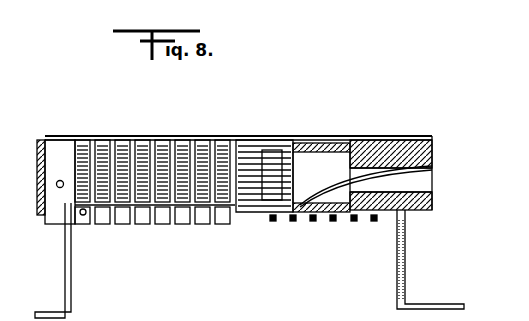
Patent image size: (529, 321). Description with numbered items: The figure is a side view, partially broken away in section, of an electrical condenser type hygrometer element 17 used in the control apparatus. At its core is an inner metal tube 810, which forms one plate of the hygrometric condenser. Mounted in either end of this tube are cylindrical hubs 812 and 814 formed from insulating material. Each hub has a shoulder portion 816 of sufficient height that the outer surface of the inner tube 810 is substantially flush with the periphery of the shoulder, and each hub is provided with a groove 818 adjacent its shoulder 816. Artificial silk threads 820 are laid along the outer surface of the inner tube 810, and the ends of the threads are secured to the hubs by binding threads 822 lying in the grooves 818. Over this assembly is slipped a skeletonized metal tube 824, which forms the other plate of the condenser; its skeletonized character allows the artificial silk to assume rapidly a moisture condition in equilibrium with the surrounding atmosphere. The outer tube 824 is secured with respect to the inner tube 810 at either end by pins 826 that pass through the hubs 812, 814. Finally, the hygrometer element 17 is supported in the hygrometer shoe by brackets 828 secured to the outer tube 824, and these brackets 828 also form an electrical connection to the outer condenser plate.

The hygrometer element 17 is at (135, 123).
The inner metal tube 810 is at (282, 165).
The cylindrical hub 812 is at (428, 210).
The cylindrical hub 814 is at (37, 150).
The shoulder portion 816 is at (378, 208).
The groove 818 is at (380, 203).
The artificial silk thread 820 is at (242, 158).
The binding thread 822 is at (380, 146).
The skeletonized metal tube 824 is at (181, 205).
The pin 826 is at (59, 187).
The bracket 828 is at (72, 291).